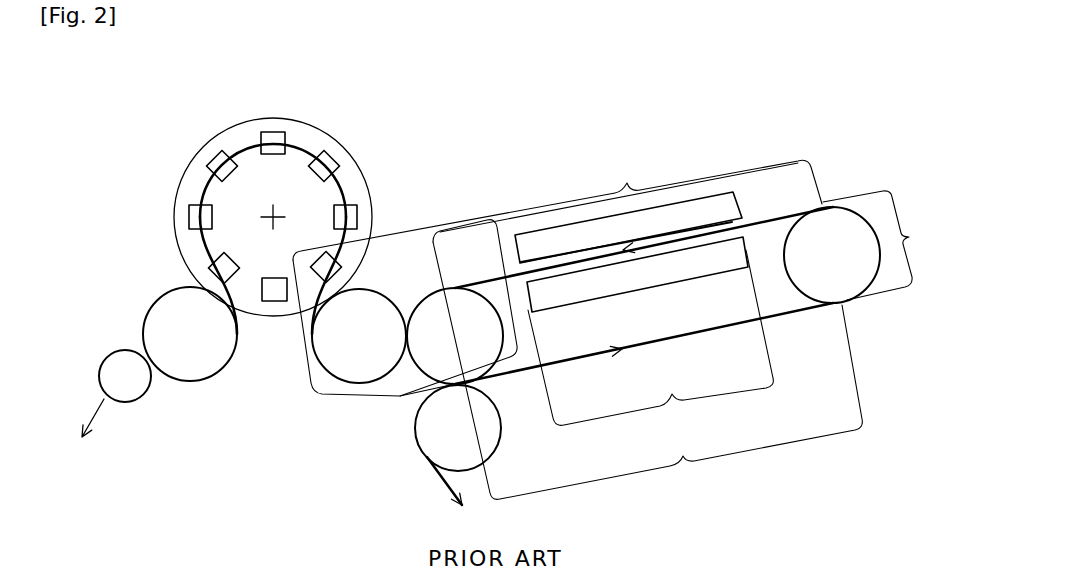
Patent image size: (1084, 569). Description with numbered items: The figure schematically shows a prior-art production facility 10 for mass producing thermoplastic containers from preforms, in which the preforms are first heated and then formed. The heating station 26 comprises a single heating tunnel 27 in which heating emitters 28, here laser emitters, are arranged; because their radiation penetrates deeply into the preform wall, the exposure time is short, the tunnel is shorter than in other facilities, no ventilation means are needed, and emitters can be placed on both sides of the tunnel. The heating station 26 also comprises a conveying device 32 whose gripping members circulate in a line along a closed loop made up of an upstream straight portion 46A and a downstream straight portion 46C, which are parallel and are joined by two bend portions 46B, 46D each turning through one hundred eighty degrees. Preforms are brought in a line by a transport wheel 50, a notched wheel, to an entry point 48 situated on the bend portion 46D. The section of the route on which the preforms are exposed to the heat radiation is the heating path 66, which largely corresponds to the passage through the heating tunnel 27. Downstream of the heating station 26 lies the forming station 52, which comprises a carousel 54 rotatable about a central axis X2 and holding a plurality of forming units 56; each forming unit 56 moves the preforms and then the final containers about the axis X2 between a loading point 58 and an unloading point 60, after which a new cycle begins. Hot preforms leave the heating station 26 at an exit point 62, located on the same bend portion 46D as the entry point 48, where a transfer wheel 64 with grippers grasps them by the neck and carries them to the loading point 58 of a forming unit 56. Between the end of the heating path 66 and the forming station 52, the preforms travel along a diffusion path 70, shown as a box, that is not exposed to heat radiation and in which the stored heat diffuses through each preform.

The production facility 10 is at (660, 102).
The heating station 26 is at (764, 160).
The heating tunnel 27 is at (703, 233).
The heating emitters 28 is at (722, 205).
The conveying device 32 is at (806, 332).
The upstream straight portion 46A is at (647, 331).
The bend portion 46B is at (872, 247).
The downstream straight portion 46C is at (644, 225).
The bend portion 46D is at (400, 305).
The entry point 48 is at (458, 388).
The transport wheel 50 is at (448, 452).
The forming station 52 is at (196, 104).
The carousel 54 is at (232, 212).
The forming unit 56 is at (192, 220).
The loading point 58 is at (343, 318).
The unloading point 60 is at (223, 300).
The exit point 62 is at (432, 328).
The transfer wheel 64 is at (340, 345).
The heating path 66 is at (650, 346).
The diffusion path 70 is at (412, 232).
The central axis X2 is at (275, 217).